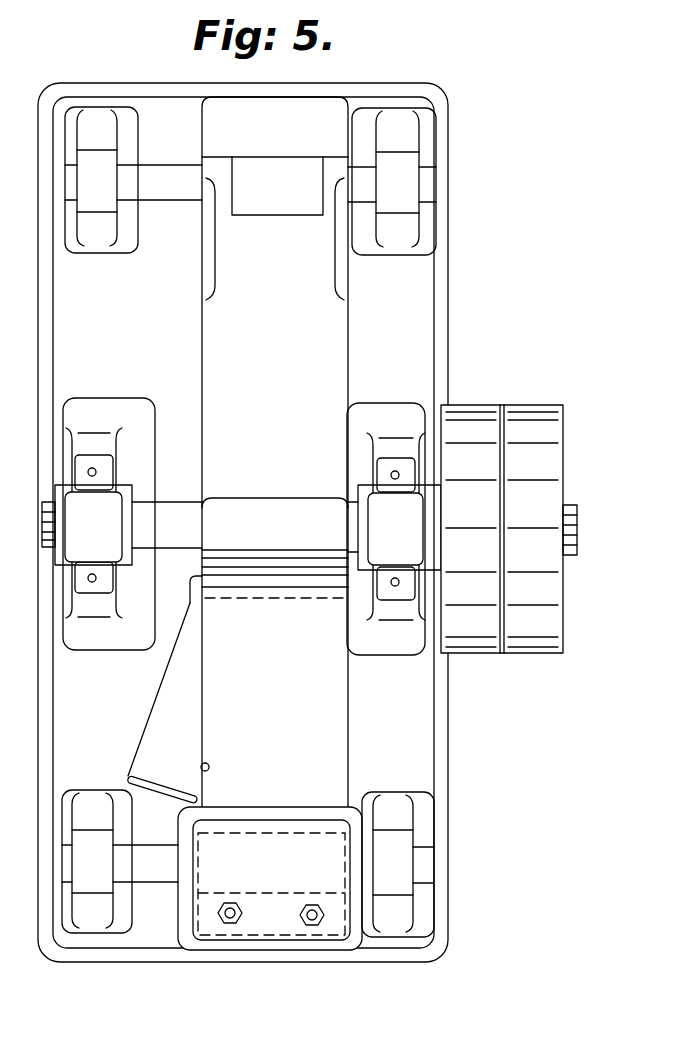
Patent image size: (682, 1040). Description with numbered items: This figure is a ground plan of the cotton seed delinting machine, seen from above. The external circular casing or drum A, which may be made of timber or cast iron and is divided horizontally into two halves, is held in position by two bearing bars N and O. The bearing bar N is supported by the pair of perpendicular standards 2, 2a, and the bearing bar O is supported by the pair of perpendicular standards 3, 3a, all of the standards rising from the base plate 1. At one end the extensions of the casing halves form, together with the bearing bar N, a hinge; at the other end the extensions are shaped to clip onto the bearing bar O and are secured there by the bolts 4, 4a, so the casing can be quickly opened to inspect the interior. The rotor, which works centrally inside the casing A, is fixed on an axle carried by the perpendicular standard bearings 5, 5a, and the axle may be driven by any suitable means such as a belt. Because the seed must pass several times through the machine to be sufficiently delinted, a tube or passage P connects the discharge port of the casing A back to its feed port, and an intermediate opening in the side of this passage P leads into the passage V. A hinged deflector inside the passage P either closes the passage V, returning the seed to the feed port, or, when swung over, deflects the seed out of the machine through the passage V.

The base plate 1 is at (243, 522).
The perpendicular standard 2 is at (392, 181).
The perpendicular standard 2a is at (101, 180).
The perpendicular standard 3 is at (398, 864).
The perpendicular standard 3a is at (97, 861).
The bolt 4 is at (230, 925).
The bolt 4a is at (312, 927).
The perpendicular standard bearing 5 is at (394, 529).
The perpendicular standard bearing 5a is at (122, 524).
The external circular casing or drum A is at (275, 342).
The bearing bar N is at (159, 182).
The tube or passage P is at (275, 691).
The passage V is at (168, 690).
The bearing bar O is at (145, 863).